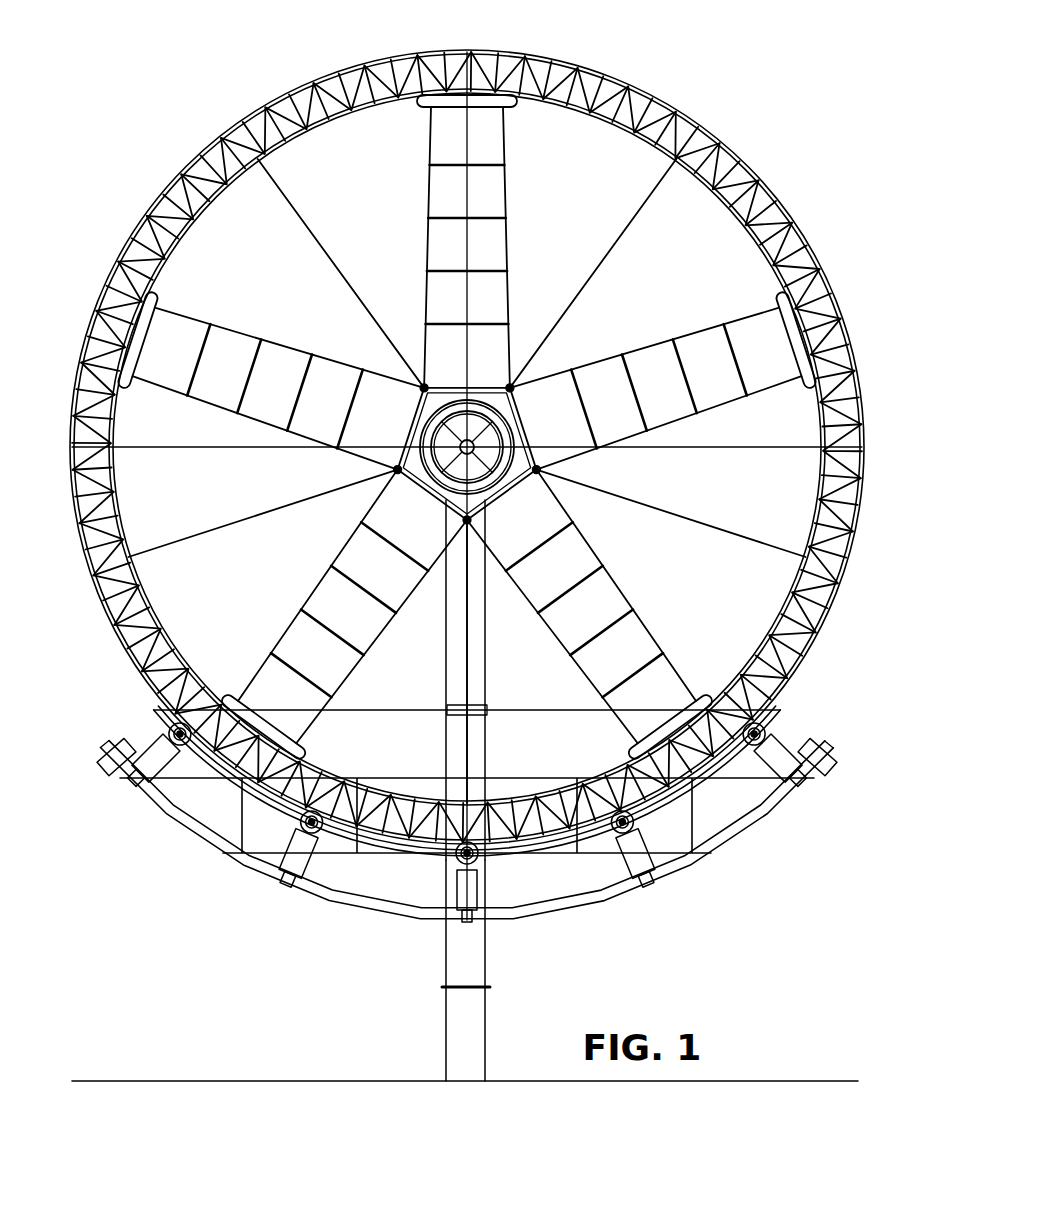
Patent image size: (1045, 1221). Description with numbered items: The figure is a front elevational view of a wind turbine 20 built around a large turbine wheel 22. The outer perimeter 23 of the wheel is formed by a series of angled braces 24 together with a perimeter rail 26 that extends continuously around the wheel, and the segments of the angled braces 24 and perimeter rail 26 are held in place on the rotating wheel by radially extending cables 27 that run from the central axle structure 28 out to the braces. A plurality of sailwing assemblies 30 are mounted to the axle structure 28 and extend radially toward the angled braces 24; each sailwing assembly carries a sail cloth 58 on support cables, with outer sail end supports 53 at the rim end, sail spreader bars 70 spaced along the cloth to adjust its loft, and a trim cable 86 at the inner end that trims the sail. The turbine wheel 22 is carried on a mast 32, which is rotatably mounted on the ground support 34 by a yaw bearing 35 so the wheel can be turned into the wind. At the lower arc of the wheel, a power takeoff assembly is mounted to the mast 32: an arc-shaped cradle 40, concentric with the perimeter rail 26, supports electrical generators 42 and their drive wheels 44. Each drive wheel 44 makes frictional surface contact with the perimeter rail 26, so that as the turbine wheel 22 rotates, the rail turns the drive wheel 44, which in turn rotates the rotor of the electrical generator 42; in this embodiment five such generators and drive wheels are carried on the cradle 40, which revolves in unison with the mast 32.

The wind turbine 20 is at (853, 196).
The turbine wheel 22 is at (731, 132).
The outer perimeter 23 is at (540, 58).
The angled braces 24 is at (618, 87).
The perimeter rail 26 is at (753, 173).
The radially extending cables 27 is at (637, 217).
The axle structure 28 is at (520, 380).
The sailwing assemblies 30 is at (428, 182).
The mast 32 is at (492, 683).
The ground support 34 is at (480, 1012).
The yaw bearing 35 is at (478, 983).
The cradle 40 is at (373, 915).
The electrical generator 42 is at (800, 760).
The drive wheel 44 is at (768, 730).
The outer sail end supports 53 is at (500, 104).
The sail cloth 58 is at (504, 200).
The sail spreader bars 70 is at (430, 270).
The trim cable 86 is at (513, 316).